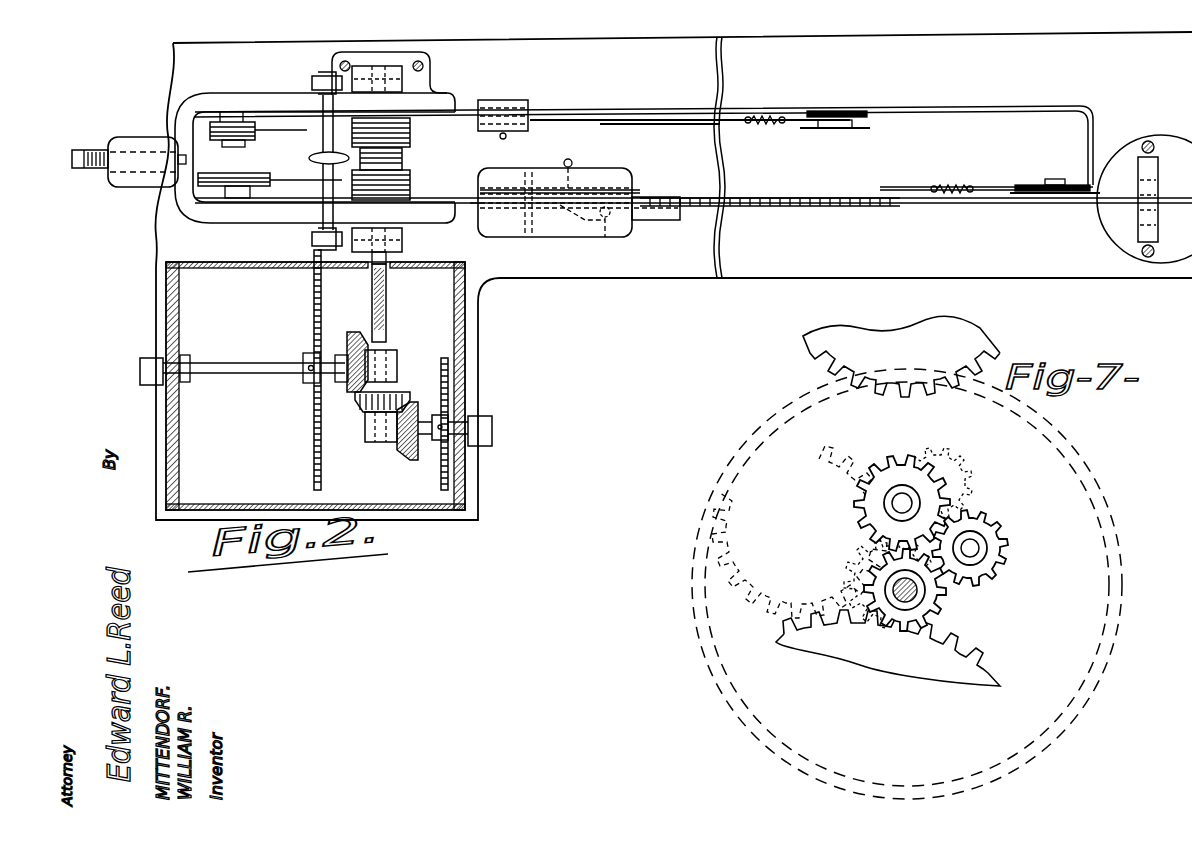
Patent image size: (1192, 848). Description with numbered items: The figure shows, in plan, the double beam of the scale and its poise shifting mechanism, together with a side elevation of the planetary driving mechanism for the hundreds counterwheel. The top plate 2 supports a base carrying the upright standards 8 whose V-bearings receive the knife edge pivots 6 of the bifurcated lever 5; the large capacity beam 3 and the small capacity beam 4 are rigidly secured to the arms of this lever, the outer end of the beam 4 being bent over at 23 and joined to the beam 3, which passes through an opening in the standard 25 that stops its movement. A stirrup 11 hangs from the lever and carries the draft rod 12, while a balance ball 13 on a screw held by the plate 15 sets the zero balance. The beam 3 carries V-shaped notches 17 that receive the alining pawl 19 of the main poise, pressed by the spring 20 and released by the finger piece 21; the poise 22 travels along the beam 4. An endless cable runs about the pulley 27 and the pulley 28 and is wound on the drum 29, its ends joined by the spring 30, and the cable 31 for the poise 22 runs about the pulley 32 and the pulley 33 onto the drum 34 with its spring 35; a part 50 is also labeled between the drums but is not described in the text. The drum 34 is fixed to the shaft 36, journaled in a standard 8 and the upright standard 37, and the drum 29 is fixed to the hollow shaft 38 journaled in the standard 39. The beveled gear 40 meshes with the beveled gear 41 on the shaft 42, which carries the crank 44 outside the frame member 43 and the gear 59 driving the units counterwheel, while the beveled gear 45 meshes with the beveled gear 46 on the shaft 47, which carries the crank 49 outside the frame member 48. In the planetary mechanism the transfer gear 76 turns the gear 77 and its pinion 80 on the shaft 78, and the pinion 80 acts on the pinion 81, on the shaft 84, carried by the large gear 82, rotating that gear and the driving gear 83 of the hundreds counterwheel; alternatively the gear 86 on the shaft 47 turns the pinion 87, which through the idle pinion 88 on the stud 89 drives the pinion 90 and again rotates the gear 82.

In FIG. 2, the top plate 2 is at (673, 276).
In FIG. 2, the beam 3 is at (932, 203).
In FIG. 2, the beam 4 is at (595, 112).
In FIG. 2, the bifurcated lever 5 is at (248, 218).
In FIG. 2, the knife edge pivots 6 is at (382, 108).
In FIG. 2, the upright standards 8 is at (403, 243).
In FIG. 2, the stirrup 11 is at (312, 82).
In FIG. 2, the draft rod 12 is at (312, 157).
In FIG. 2, the balance ball 13 is at (130, 150).
In FIG. 2, the plate 15 is at (76, 150).
In FIG. 2, the V-shaped notch 17 is at (780, 206).
In FIG. 2, the alining pawl 19 is at (478, 212).
In FIG. 2, the spring 20 is at (605, 232).
In FIG. 2, the finger piece 21 is at (660, 222).
In FIG. 2, the poise 22 is at (508, 100).
In FIG. 2, the bent over end 23 is at (1088, 150).
In FIG. 2, the standard 25 is at (1140, 218).
In FIG. 2, the pulley 27 is at (1030, 170).
In FIG. 2, the pulley 28 is at (212, 152).
In FIG. 2, the drum 29 is at (411, 178).
In FIG. 2, the spring 30 is at (945, 184).
In FIG. 2, the cable 31 is at (573, 122).
In FIG. 2, the pulley 32 is at (845, 128).
In FIG. 2, the pulley 33 is at (253, 138).
In FIG. 2, the drum 34 is at (411, 136).
In FIG. 2, the spring 35 is at (768, 123).
In FIG. 2, the shaft 36 is at (387, 318).
In FIG. 2, the upright standard 37 is at (365, 432).
In FIG. 2, the hollow shaft 38 is at (372, 272).
In FIG. 2, the standard 39 is at (394, 362).
In FIG. 2, the beveled gear 40 is at (360, 408).
In FIG. 2, the beveled gear 41 is at (405, 452).
In FIG. 2, the shaft 42 is at (428, 440).
In FIG. 2, the frame member 43 is at (466, 346).
In FIG. 2, the operating handle 44 is at (492, 436).
In FIG. 2, the beveled gear 45 is at (394, 367).
In FIG. 2, the beveled gear 46 is at (350, 340).
In FIG. 2, the shaft 47 is at (252, 364).
In FIG. 2, the frame member 48 is at (179, 430).
In FIG. 2, the operating handle 49 is at (140, 372).
In FIG. 2, the middle drum 50 is at (403, 154).
In FIG. 2, the gear 59 is at (444, 358).
In FIG. 7, the transfer gear 76 is at (815, 460).
In FIG. 7, the gear 77 is at (778, 572).
In FIG. 7, the shaft 78 is at (920, 592).
In FIG. 7, the pinion 80 is at (872, 566).
In FIG. 7, the pinion 81 is at (920, 458).
In FIG. 7, the large gear 82 is at (1000, 398).
In FIG. 7, the driving gear 83 is at (982, 356).
In FIG. 7, the shaft 84 is at (902, 502).
In FIG. 2, the gear 86 is at (313, 470).
In FIG. 7, the gear 86 is at (875, 660).
In FIG. 7, the pinion 87 is at (870, 594).
In FIG. 7, the idle pinion 88 is at (1010, 548).
In FIG. 7, the stud 89 is at (972, 546).
In FIG. 7, the pinion 90 is at (925, 480).